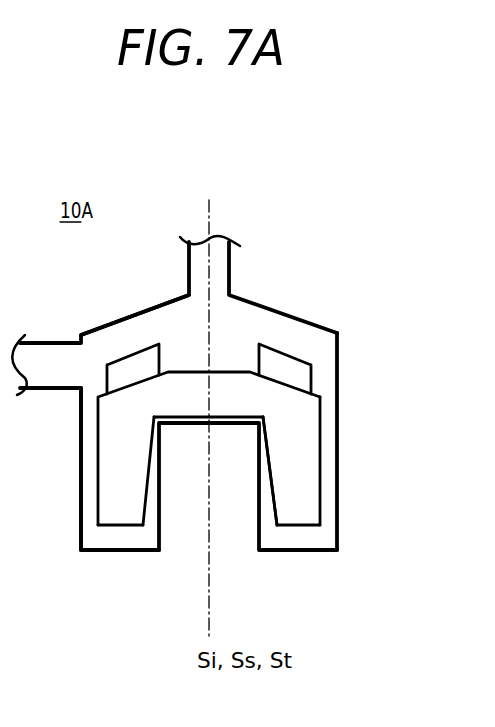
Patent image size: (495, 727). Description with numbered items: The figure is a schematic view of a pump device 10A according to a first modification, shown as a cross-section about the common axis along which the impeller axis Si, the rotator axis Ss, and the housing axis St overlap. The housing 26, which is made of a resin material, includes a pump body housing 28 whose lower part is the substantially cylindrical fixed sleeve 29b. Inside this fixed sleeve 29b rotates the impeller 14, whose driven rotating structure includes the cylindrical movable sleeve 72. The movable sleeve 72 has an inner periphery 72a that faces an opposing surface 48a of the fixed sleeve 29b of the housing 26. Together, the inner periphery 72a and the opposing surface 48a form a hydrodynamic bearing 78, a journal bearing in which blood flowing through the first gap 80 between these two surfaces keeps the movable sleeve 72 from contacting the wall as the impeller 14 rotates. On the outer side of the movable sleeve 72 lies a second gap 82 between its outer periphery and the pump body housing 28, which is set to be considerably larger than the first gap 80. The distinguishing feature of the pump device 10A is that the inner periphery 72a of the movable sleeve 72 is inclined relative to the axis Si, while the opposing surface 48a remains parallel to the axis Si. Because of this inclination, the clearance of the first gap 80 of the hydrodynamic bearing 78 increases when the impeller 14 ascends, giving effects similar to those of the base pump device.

The pump device 10A is at (120, 469).
The pump body housing 28 is at (131, 316).
The housing 26 is at (135, 315).
The impeller 14 is at (286, 347).
The fixed sleeve 29b is at (338, 445).
The movable sleeve 72 is at (113, 451).
The inner periphery 72a is at (148, 485).
The opposing surface 48a is at (146, 505).
The second gap 82 is at (330, 497).
The first gap 80 is at (265, 507).
The hydrodynamic bearing 78 is at (270, 471).